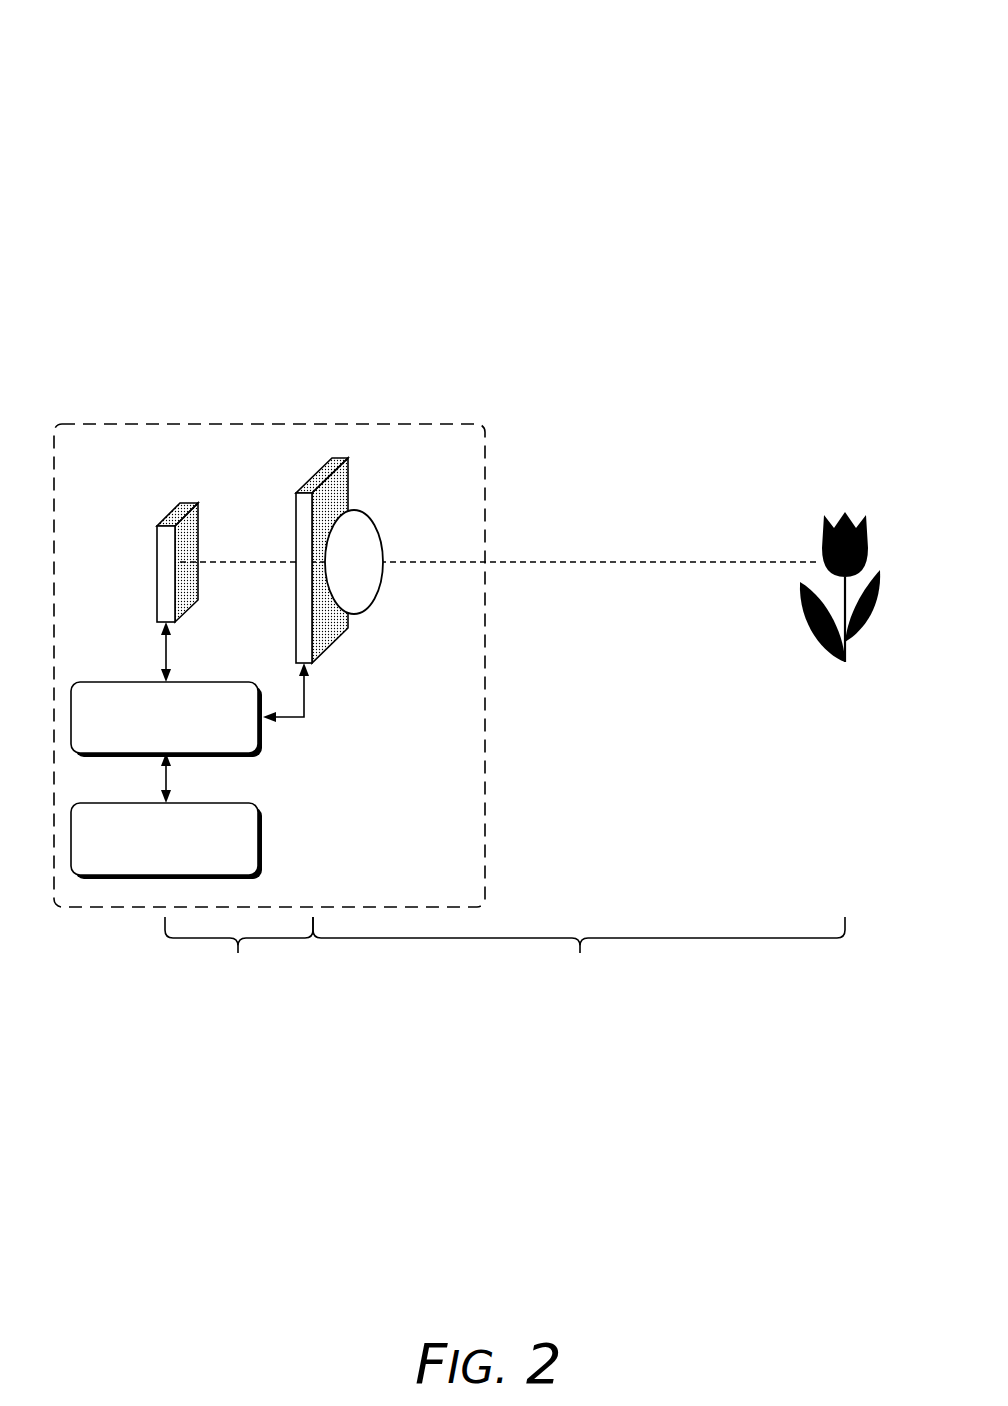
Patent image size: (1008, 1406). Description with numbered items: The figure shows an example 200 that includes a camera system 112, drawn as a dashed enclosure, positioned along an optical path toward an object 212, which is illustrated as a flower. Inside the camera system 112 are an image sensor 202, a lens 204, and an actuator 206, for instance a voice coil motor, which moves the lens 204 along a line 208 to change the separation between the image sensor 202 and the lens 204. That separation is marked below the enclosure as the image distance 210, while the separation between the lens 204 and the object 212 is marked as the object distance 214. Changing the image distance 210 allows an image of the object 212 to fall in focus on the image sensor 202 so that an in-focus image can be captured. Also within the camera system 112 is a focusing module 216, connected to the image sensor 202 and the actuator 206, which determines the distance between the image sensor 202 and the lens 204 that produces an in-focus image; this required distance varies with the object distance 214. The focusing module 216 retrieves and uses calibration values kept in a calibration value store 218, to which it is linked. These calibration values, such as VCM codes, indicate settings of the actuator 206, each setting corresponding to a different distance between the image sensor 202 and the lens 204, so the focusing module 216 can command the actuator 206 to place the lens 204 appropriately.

The example 200 is at (152, 66).
The camera system 112 is at (269, 665).
The image sensor 202 is at (192, 503).
The lens 204 is at (358, 513).
The actuator 206 is at (340, 458).
The line 208 is at (582, 563).
The image distance 210 is at (239, 982).
The object 212 is at (818, 457).
The object distance 214 is at (579, 982).
The focusing module 216 is at (190, 689).
The calibration value store 218 is at (166, 816).